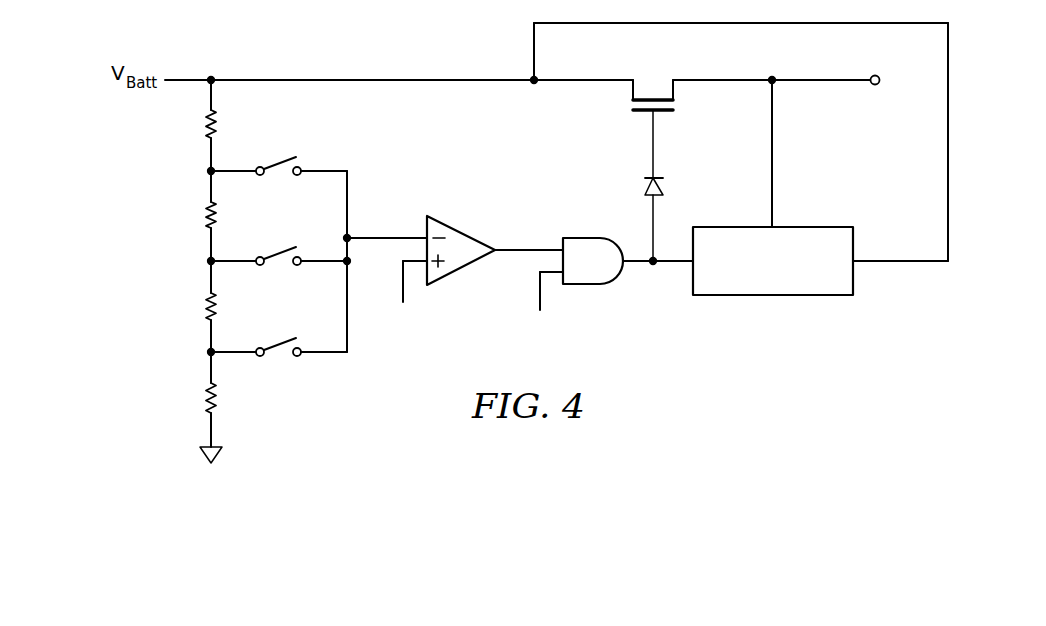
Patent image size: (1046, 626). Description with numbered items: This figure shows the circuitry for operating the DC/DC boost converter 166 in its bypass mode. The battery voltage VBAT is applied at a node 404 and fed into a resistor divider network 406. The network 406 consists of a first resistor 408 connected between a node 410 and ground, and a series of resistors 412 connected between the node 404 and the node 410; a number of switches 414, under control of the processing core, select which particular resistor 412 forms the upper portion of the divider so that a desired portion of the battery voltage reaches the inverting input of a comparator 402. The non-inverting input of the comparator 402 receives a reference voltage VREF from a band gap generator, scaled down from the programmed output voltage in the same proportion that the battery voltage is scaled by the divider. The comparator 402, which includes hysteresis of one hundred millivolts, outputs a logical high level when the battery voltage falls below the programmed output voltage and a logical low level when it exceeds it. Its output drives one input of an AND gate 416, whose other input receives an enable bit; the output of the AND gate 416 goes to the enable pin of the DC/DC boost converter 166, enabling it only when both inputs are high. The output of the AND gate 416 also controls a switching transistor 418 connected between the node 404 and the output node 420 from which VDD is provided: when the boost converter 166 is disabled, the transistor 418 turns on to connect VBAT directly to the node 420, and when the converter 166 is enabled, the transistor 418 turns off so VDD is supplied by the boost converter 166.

The DC/DC boost converter 166 is at (785, 296).
The comparator 402 is at (462, 228).
The node 404 is at (209, 79).
The resistor divider network 406 is at (150, 267).
The first resistor 408 is at (206, 405).
The node 410 is at (216, 357).
The resistors 412 is at (206, 128).
The switches 414 is at (286, 160).
The AND gate 416 is at (592, 286).
The switching transistor 418 is at (665, 115).
The output node 420 is at (777, 85).